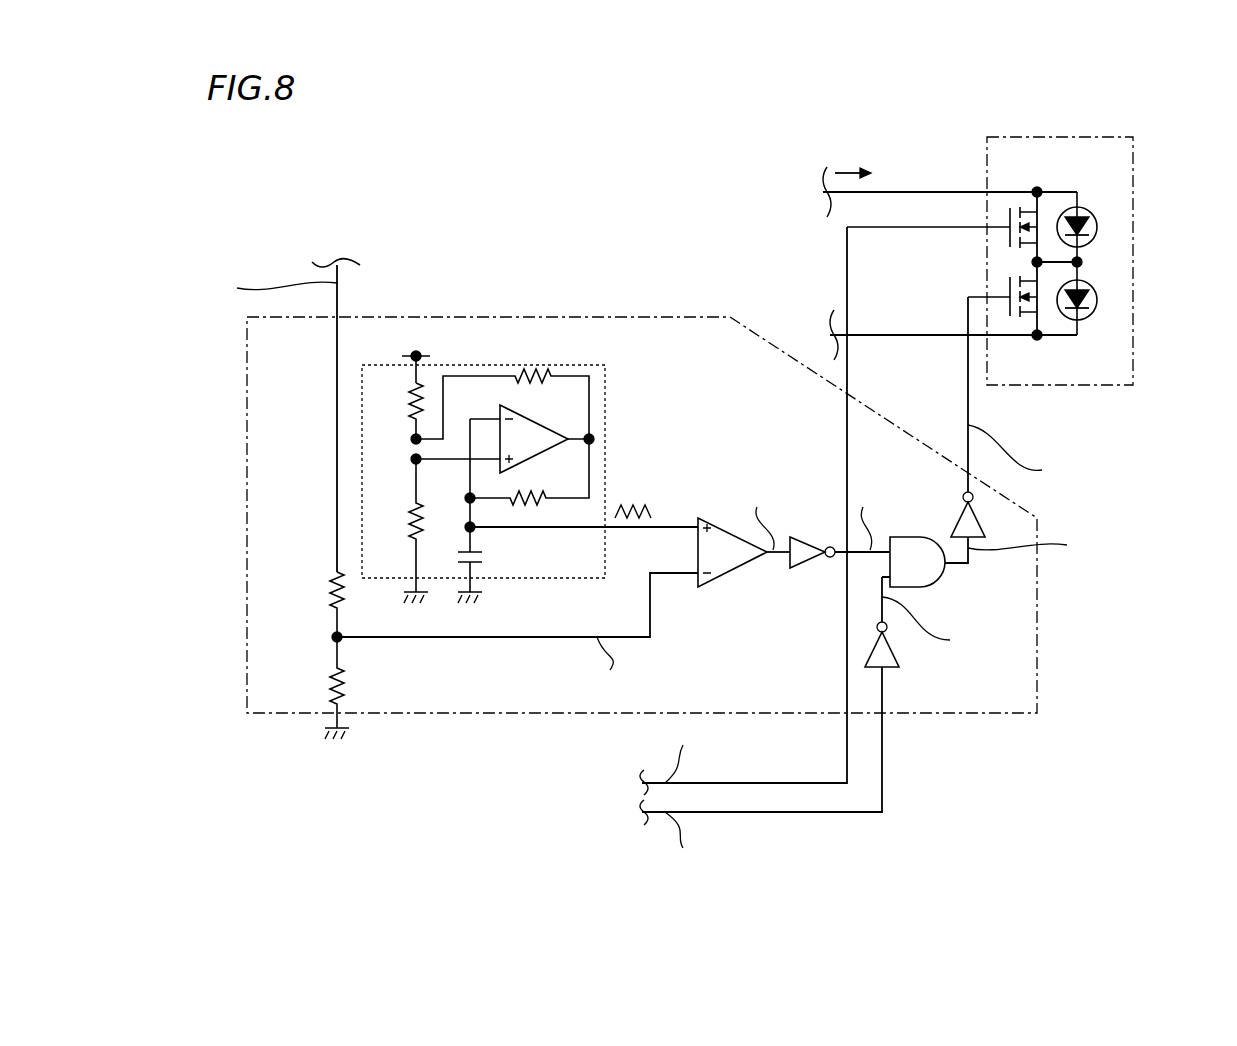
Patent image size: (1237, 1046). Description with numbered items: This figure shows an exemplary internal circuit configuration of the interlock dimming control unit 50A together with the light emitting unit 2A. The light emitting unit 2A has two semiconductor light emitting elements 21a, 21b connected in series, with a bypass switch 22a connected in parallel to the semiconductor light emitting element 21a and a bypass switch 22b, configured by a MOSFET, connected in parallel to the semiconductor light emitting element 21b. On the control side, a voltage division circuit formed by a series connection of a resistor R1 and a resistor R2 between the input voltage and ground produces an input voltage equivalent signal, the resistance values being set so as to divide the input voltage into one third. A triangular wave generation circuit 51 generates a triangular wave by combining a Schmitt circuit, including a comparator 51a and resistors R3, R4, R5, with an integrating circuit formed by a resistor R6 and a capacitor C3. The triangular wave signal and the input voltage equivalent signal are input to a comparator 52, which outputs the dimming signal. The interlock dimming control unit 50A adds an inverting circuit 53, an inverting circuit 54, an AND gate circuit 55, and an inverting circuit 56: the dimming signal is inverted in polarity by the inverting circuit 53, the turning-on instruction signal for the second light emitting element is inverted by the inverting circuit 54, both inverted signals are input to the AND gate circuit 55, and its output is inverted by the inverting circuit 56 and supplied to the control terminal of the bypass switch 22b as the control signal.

The light emitting unit 2A is at (1115, 137).
The semiconductor light emitting element 21a is at (1097, 227).
The semiconductor light emitting element 21b is at (1097, 300).
The bypass switch 22a is at (1049, 216).
The bypass switch 22b is at (1049, 312).
The interlock dimming control unit 50A is at (1037, 690).
The triangular wave generation circuit 51 is at (507, 365).
The comparator 51a is at (555, 420).
The comparator 52 is at (750, 567).
The inverting circuit 53 is at (808, 540).
The inverting circuit 54 is at (898, 653).
The AND gate circuit 55 is at (915, 535).
The inverting circuit 56 is at (953, 510).
The resistor R1 is at (320, 604).
The resistor R2 is at (321, 682).
The resistor R3 is at (396, 411).
The resistor R4 is at (396, 525).
The resistor R5 is at (502, 404).
The resistor R6 is at (529, 472).
The capacitor C3 is at (485, 571).